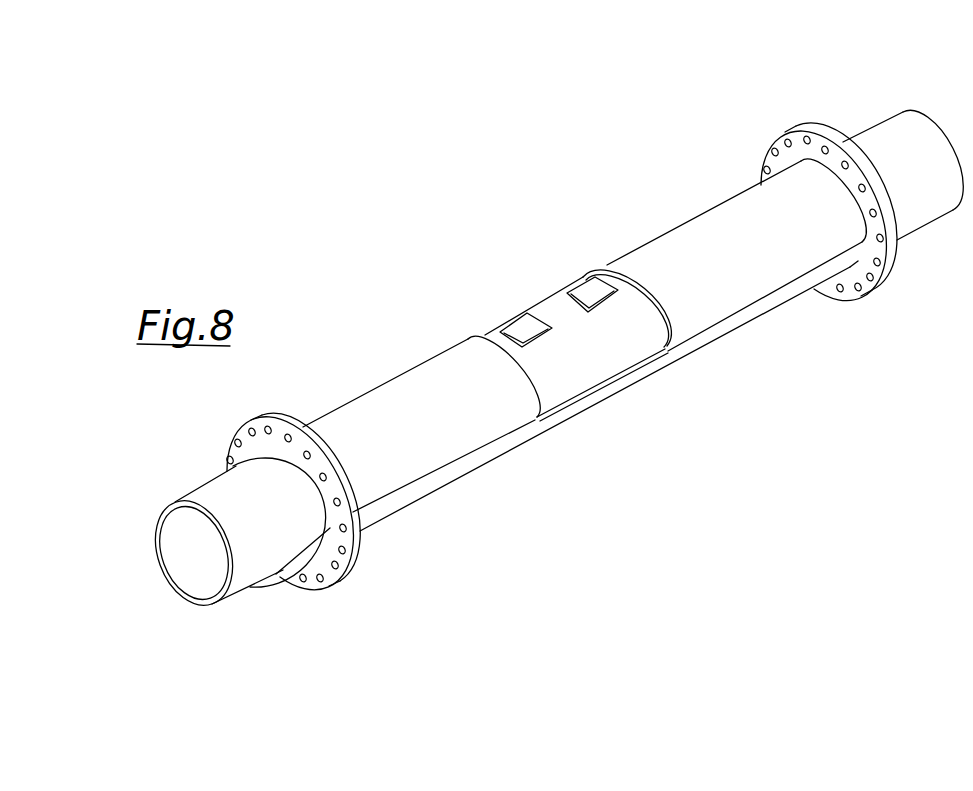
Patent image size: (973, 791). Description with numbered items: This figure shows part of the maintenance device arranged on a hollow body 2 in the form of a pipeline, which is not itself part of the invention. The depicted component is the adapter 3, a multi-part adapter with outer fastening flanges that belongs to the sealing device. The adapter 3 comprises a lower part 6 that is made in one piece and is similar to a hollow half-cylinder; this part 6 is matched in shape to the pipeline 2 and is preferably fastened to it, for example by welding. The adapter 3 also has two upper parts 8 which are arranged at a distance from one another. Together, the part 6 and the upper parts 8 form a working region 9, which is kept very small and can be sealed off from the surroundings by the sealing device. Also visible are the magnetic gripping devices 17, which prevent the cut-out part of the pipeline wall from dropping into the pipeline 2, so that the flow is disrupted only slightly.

The hollow body 2 is at (888, 157).
The adapter 3 is at (382, 326).
The part 6 is at (720, 328).
The upper parts 8 is at (693, 235).
The working region 9 is at (633, 343).
The magnetic gripping devices 17 is at (524, 330).